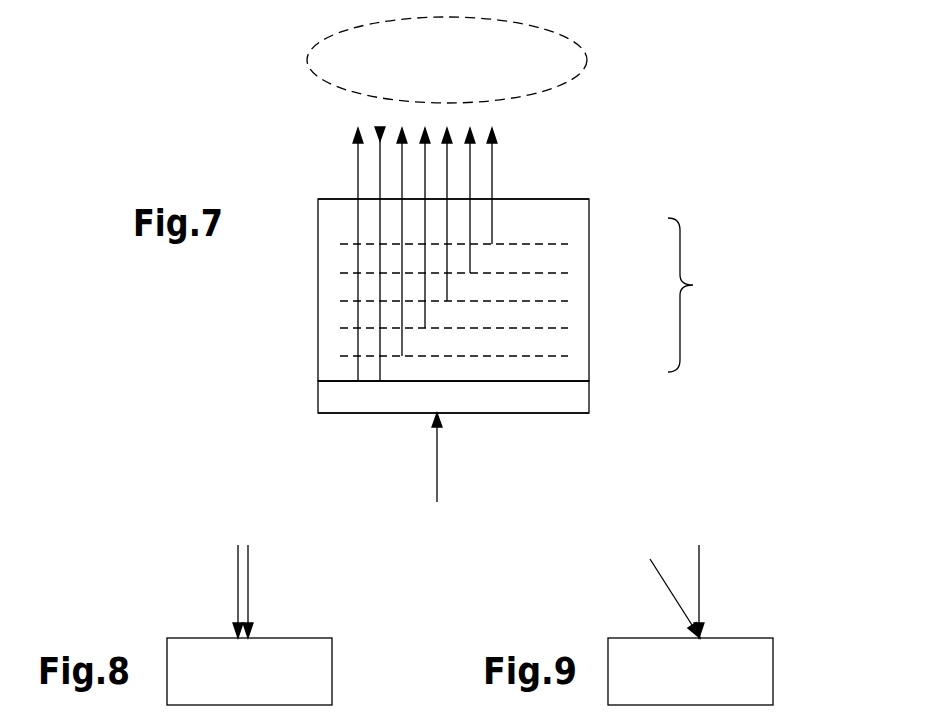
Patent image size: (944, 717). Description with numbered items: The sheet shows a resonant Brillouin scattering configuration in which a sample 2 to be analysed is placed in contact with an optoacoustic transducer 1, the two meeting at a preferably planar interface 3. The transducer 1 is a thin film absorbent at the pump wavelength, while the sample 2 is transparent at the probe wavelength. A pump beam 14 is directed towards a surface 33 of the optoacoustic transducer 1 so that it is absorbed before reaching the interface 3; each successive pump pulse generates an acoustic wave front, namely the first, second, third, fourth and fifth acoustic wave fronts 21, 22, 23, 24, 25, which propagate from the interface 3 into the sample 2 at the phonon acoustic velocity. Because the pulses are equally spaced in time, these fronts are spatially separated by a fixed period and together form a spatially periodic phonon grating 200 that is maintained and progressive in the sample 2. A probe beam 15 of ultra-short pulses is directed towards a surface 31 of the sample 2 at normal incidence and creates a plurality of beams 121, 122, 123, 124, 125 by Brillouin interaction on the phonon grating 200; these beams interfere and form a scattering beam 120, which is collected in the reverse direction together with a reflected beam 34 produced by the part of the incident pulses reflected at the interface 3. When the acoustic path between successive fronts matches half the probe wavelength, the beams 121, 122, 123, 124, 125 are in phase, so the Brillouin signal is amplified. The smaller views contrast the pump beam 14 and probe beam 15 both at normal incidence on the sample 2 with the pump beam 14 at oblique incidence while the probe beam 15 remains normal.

In FIG. 7, the optoacoustic transducer 1 is at (328, 395).
In FIG. 7, the sample 2 is at (318, 262).
In FIG. 8, the sample 2 is at (332, 658).
In FIG. 9, the sample 2 is at (773, 658).
In FIG. 7, the interface 3 is at (332, 381).
In FIG. 7, the pump beam 14 is at (437, 450).
In FIG. 8, the pump beam 14 is at (237, 573).
In FIG. 9, the pump beam 14 is at (663, 580).
In FIG. 7, the probe beam 15 is at (380, 128).
In FIG. 8, the probe beam 15 is at (250, 573).
In FIG. 9, the probe beam 15 is at (700, 565).
In FIG. 7, the first acoustic wave front 21 is at (567, 245).
In FIG. 7, the second acoustic wave front 22 is at (567, 272).
In FIG. 7, the third acoustic wave front 23 is at (567, 302).
In FIG. 7, the fourth acoustic wave front 24 is at (567, 328).
In FIG. 7, the fifth acoustic wave front 25 is at (567, 357).
In FIG. 7, the surface of the sample 31 is at (553, 199).
In FIG. 7, the surface of the optoacoustic transducer 33 is at (546, 413).
In FIG. 7, the reflected beam 34 is at (356, 132).
In FIG. 7, the scattering beam 120 is at (588, 63).
In FIG. 7, the first Brillouin-induced beam 121 is at (495, 132).
In FIG. 7, the second Brillouin-induced beam 122 is at (472, 133).
In FIG. 7, the third Brillouin-induced beam 123 is at (447, 132).
In FIG. 7, the fourth Brillouin-induced beam 124 is at (425, 132).
In FIG. 7, the fifth Brillouin-induced beam 125 is at (403, 133).
In FIG. 7, the phonon grating 200 is at (708, 295).